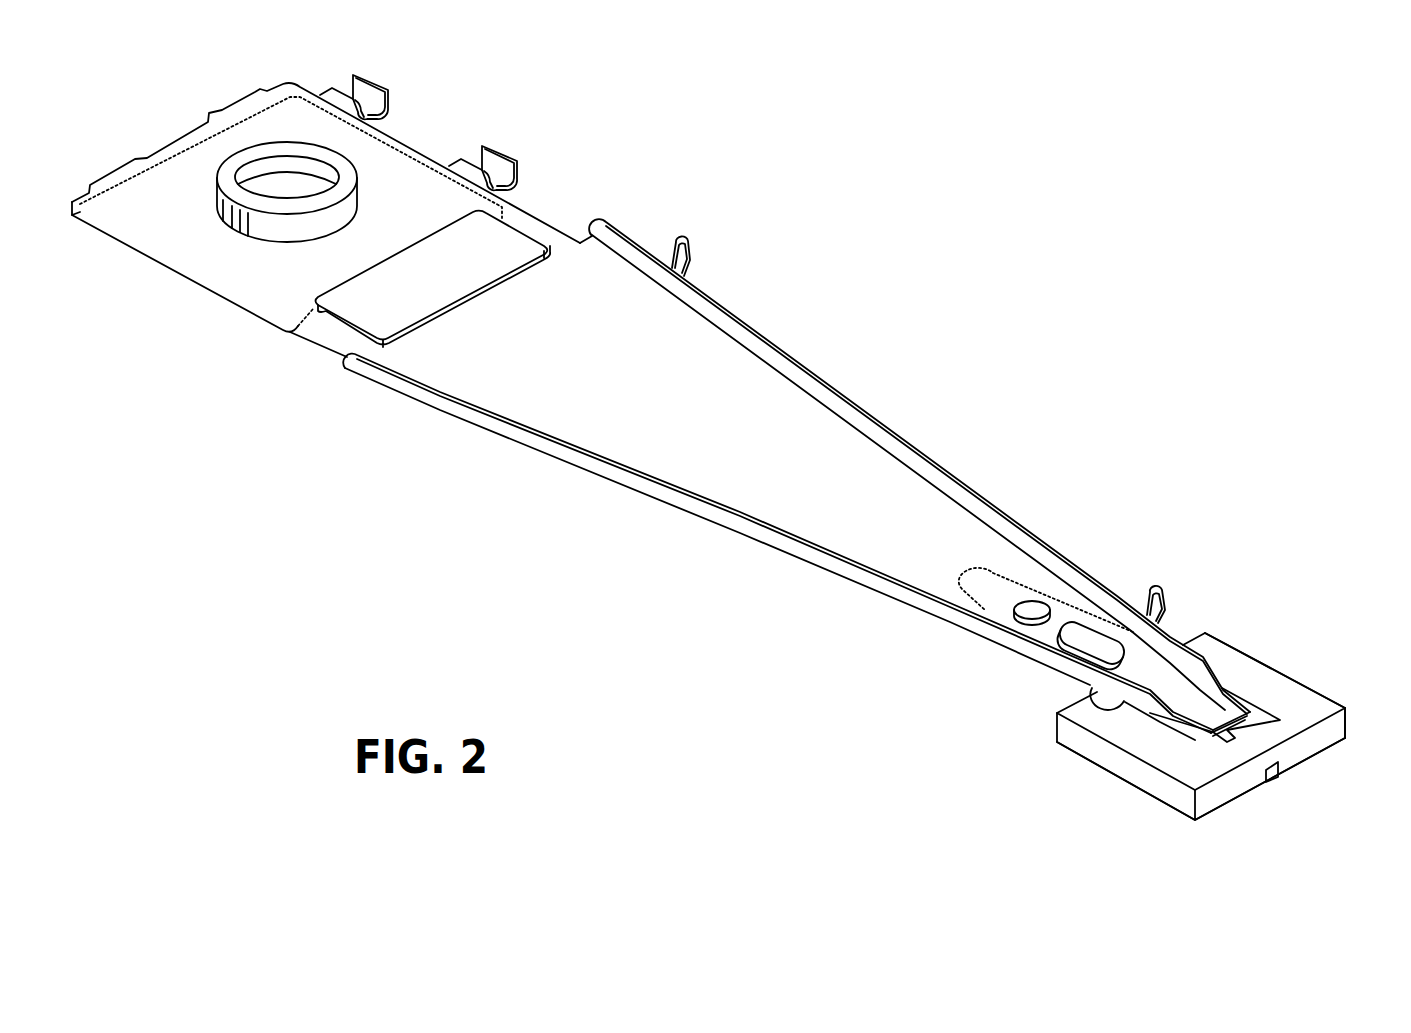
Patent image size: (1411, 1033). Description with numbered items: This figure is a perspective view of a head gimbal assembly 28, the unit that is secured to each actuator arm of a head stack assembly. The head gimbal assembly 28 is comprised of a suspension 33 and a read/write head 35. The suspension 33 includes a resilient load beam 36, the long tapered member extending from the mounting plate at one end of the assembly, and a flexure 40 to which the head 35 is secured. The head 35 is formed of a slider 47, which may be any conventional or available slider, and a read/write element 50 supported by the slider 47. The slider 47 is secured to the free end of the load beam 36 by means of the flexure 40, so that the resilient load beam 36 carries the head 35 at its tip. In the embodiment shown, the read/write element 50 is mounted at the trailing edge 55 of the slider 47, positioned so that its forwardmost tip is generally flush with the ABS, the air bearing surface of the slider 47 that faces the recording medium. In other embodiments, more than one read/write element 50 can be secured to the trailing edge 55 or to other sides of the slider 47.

The head gimbal assembly 28 is at (739, 474).
The suspension 33 is at (1033, 510).
The load beam 36 is at (817, 443).
The flexure 40 is at (1090, 688).
The read/write head 35 is at (1231, 714).
The slider 47 is at (1272, 664).
The trailing edge 55 is at (1346, 737).
The read/write element 50 is at (1274, 779).
The air bearing surface ABS is at (1222, 809).